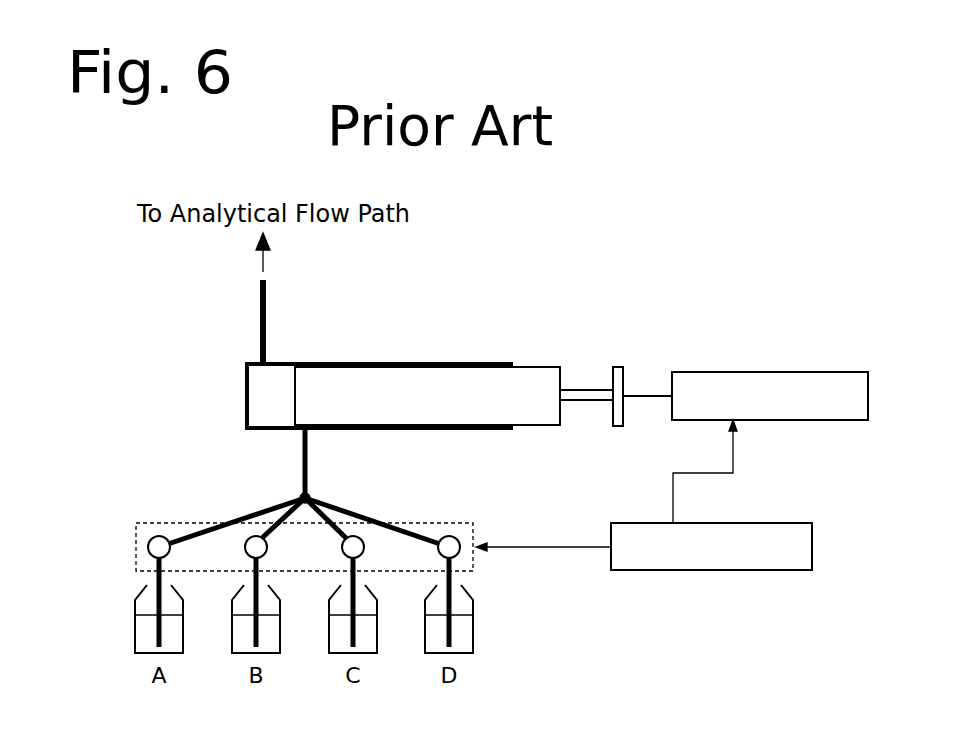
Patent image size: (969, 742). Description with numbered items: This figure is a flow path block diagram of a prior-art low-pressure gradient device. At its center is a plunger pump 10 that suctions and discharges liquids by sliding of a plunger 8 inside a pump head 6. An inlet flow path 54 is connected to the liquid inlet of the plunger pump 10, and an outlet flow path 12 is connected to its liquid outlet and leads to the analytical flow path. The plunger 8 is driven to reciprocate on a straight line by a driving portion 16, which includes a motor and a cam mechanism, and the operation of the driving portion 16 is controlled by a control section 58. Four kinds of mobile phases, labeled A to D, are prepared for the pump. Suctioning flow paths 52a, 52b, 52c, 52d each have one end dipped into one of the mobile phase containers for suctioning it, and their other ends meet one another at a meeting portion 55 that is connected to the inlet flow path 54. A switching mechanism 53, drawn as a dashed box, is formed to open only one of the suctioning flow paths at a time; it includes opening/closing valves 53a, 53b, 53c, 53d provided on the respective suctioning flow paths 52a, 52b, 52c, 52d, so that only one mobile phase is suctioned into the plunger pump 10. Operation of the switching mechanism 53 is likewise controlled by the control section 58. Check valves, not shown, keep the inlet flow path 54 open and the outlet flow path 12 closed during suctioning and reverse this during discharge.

The pump head 6 is at (287, 362).
The plunger 8 is at (535, 365).
The plunger pump 10 is at (459, 357).
The outlet flow path 12 is at (265, 298).
The driving portion 16 is at (815, 371).
The suctioning flow path 52a is at (192, 532).
The suctioning flow path 52b is at (268, 530).
The suctioning flow path 52c is at (338, 528).
The suctioning flow path 52d is at (412, 532).
The switching mechanism 53 is at (478, 522).
The opening/closing valve 53a is at (148, 545).
The opening/closing valve 53b is at (245, 547).
The opening/closing valve 53c is at (342, 547).
The opening/closing valve 53d is at (439, 546).
The inlet flow path 54 is at (307, 454).
The meeting portion 55 is at (307, 493).
The control section 58 is at (780, 522).